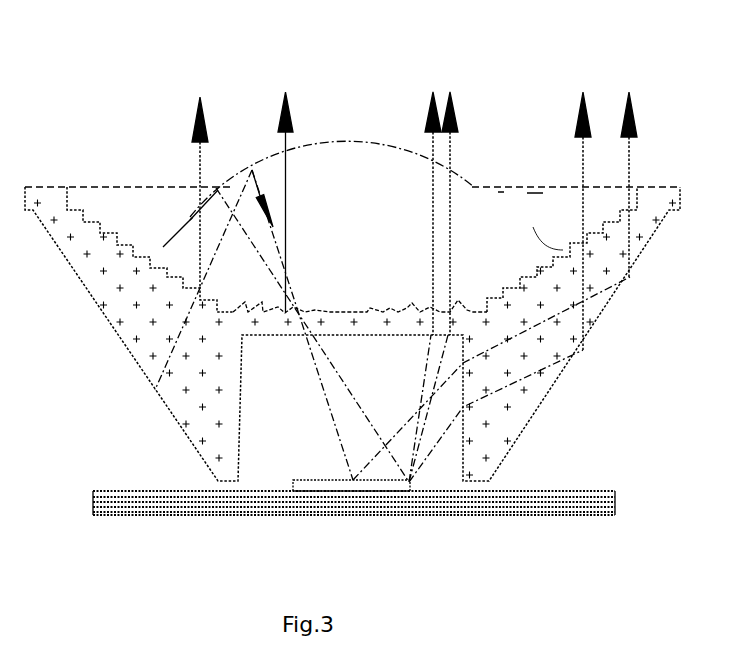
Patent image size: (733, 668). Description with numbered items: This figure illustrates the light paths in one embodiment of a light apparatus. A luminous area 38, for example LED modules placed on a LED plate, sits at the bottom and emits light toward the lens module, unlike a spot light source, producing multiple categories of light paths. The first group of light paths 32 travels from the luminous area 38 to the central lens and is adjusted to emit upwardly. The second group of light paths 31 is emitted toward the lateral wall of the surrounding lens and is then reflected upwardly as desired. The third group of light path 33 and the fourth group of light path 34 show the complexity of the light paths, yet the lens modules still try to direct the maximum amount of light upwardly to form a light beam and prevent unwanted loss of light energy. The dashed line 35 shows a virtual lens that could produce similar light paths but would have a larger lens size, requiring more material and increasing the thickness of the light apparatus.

The second group of light paths 31 is at (593, 110).
The first group of light paths 32 is at (447, 138).
The third group of light path 33 is at (293, 108).
The fourth group of light path 34 is at (192, 142).
The dashed line 35 is at (333, 147).
The luminous area 38 is at (345, 495).